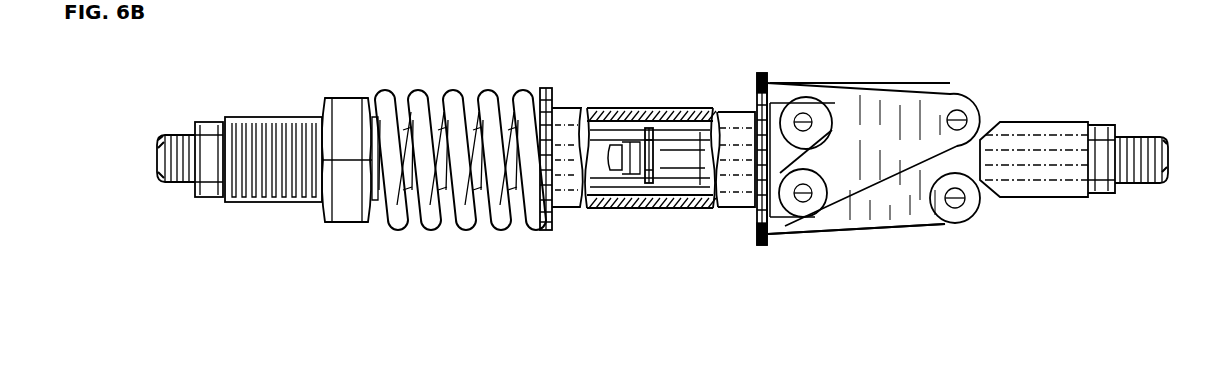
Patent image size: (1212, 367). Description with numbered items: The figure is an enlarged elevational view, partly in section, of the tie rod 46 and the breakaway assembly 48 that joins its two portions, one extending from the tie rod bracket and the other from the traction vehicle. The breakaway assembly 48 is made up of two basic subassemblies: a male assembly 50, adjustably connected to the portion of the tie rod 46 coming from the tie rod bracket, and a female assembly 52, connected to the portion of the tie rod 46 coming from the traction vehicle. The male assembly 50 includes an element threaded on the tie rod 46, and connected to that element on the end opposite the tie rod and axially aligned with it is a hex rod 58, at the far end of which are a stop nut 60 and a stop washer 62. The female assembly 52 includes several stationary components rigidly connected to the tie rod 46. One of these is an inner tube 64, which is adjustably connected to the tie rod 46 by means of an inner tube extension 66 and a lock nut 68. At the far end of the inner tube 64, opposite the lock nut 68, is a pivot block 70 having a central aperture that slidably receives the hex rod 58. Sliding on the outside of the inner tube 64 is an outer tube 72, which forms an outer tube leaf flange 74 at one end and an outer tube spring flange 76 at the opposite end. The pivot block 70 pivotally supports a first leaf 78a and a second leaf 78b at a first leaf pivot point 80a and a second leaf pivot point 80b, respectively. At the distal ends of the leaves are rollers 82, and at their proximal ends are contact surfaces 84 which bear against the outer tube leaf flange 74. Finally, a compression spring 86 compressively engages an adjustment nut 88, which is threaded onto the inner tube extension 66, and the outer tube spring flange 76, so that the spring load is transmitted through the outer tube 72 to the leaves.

The tie rod 46 is at (173, 134).
The breakaway assembly 48 is at (892, 257).
The male assembly 50 is at (1074, 199).
The female assembly 52 is at (879, 236).
The hex rod 58 is at (690, 148).
The stop nut 60 is at (627, 148).
The stop washer 62 is at (651, 128).
The inner tube 64 is at (651, 194).
The inner tube extension 66 is at (292, 117).
The lock nut 68 is at (213, 122).
The pivot block 70 is at (777, 103).
The outer tube 72 is at (613, 208).
The outer tube leaf flange 74 is at (757, 237).
The outer tube spring flange 76 is at (551, 230).
The first leaf 78a is at (893, 97).
The second leaf 78b is at (917, 217).
The first leaf pivot point 80a is at (804, 200).
The second leaf pivot point 80b is at (806, 118).
The rollers 82 is at (980, 107).
The contact surfaces 84 is at (783, 52).
The compression spring 86 is at (437, 218).
The adjustment nut 88 is at (346, 116).